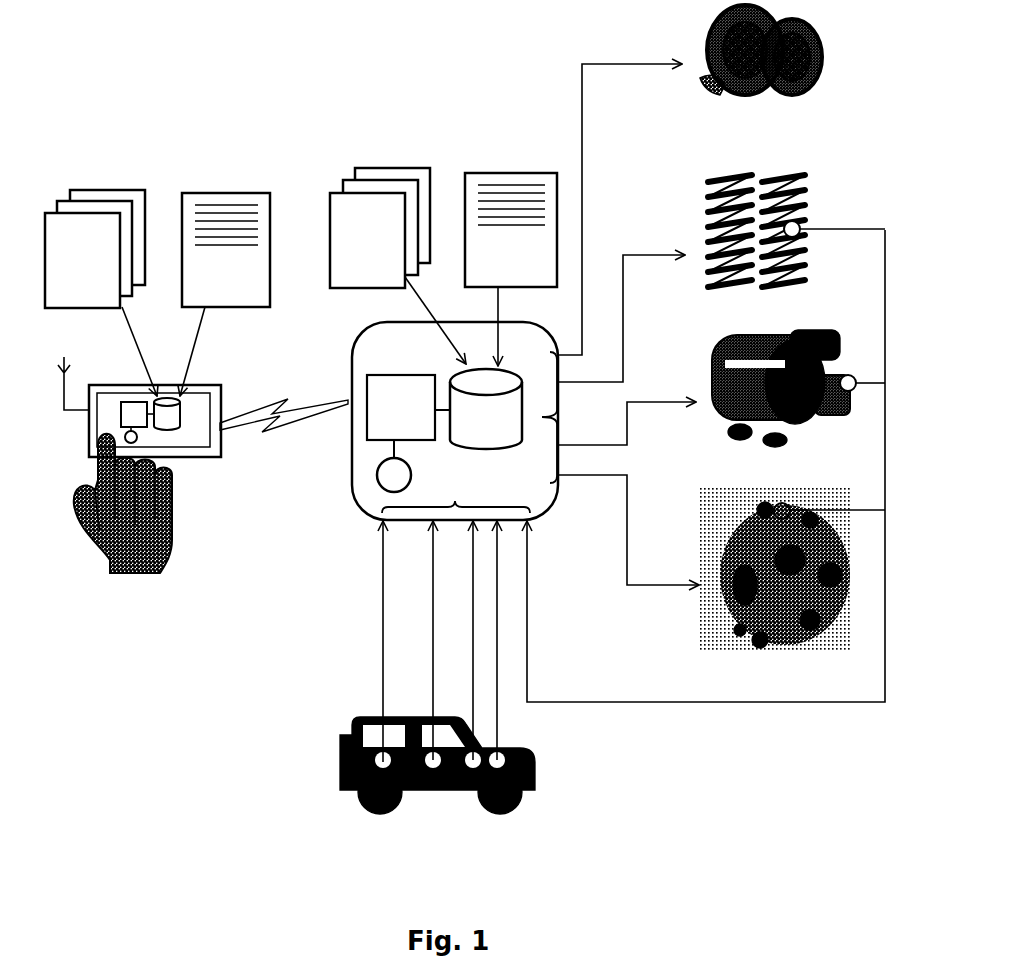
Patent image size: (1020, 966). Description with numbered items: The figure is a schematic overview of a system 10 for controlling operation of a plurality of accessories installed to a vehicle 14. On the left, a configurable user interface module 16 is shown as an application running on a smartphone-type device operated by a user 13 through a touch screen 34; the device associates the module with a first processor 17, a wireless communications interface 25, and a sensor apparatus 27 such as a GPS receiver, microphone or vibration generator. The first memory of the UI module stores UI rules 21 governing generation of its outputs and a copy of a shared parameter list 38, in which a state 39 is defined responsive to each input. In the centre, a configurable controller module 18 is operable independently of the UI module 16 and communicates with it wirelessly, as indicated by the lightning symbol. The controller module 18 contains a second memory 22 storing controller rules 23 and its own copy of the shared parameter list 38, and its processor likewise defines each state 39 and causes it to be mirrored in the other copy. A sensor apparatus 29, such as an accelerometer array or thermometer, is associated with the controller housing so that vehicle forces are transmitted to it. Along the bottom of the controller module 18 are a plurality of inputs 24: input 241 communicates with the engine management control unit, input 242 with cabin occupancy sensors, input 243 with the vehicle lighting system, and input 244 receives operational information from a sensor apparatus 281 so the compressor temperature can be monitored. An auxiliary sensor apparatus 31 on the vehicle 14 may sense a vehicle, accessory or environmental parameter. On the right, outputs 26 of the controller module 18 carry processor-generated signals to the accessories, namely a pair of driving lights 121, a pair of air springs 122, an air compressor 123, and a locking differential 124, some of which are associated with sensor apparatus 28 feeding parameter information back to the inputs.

The system 10 is at (127, 138).
The user 13 is at (145, 566).
The vehicle 14 is at (437, 788).
The configurable user interface module 16 is at (229, 463).
The first processor 17 is at (137, 414).
The configurable controller module 18 is at (345, 492).
The UI rules 21 is at (94, 281).
The second memory 22 is at (486, 409).
The controller rules 23 is at (379, 273).
The inputs 24 is at (456, 496).
The wireless communications interface 25 is at (64, 410).
The outputs 26 is at (539, 417).
The sensor apparatus 27 is at (137, 437).
The sensor apparatus 28 is at (800, 228).
The sensor apparatus 29 is at (282, 445).
The auxiliary sensor apparatus 31 is at (335, 757).
The touch screen 34 is at (205, 440).
The shared parameter list 38 is at (237, 281).
The state 39 is at (243, 215).
The driving lights 121 is at (790, 90).
The air springs 122 is at (800, 286).
The air compressor 123 is at (785, 432).
The locking differential 124 is at (790, 633).
The input 241 is at (474, 722).
The input 242 is at (433, 683).
The input 243 is at (498, 740).
The input 244 is at (528, 663).
The sensor apparatus 281 is at (848, 375).